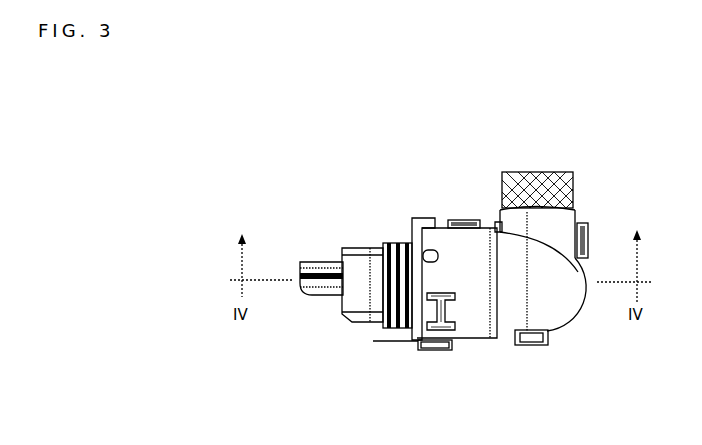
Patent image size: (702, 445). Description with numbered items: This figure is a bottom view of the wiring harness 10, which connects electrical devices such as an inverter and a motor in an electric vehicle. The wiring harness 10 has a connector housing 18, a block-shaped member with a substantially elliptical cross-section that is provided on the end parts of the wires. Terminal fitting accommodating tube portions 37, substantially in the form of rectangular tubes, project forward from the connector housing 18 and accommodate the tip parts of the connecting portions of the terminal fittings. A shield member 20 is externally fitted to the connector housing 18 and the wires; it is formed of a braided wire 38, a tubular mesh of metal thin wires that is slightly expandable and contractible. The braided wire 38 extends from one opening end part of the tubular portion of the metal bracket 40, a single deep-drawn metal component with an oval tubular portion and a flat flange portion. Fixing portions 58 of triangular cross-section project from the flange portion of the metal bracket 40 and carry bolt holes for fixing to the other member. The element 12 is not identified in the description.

The wiring harness 10 is at (443, 128).
The housing 12 is at (497, 358).
The connector housing 18 is at (368, 270).
The shield member 20 is at (560, 163).
The terminal fitting accommodating tube portion 37 is at (325, 268).
The braided wire 38 is at (558, 192).
The metal bracket 40 is at (432, 281).
The fixing portion 58 is at (390, 345).